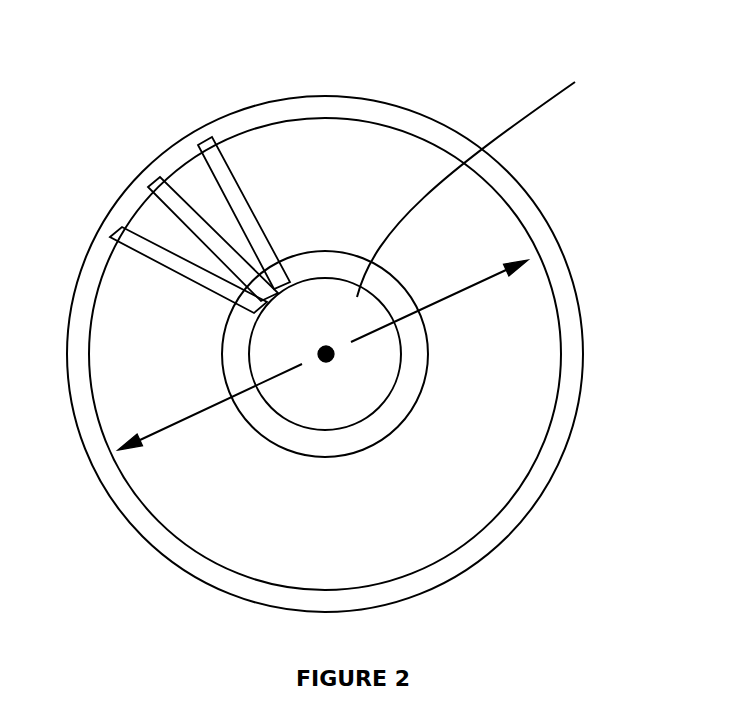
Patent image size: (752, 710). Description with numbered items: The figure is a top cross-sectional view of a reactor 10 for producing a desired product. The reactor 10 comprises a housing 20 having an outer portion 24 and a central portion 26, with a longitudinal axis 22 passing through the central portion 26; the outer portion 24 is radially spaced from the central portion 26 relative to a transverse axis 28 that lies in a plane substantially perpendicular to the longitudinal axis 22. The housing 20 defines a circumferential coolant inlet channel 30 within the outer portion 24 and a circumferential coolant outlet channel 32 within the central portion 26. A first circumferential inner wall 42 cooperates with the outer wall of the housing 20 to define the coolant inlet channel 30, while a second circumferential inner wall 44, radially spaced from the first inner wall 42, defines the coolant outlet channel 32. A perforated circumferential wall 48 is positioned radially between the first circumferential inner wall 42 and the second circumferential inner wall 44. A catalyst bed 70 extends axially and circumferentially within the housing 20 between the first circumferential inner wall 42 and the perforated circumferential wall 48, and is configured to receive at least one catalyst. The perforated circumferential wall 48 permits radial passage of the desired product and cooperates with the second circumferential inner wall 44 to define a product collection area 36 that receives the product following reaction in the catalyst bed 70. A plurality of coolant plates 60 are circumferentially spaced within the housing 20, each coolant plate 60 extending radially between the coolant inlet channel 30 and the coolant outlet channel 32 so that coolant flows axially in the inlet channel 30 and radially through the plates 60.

The reactor 10 is at (87, 55).
The housing 20 is at (377, 102).
The longitudinal axis 22 is at (320, 370).
The outer portion 24 is at (77, 343).
The central portion 26 is at (486, 178).
The transverse axis 28 is at (218, 413).
The coolant inlet channel 30 is at (196, 225).
The coolant outlet channel 32 is at (363, 363).
The product collection area 36 is at (408, 302).
The first circumferential inner wall 42 is at (183, 543).
The second circumferential inner wall 44 is at (330, 278).
The perforated circumferential wall 48 is at (221, 338).
The coolant plate 60 is at (242, 200).
The catalyst bed 70 is at (512, 360).